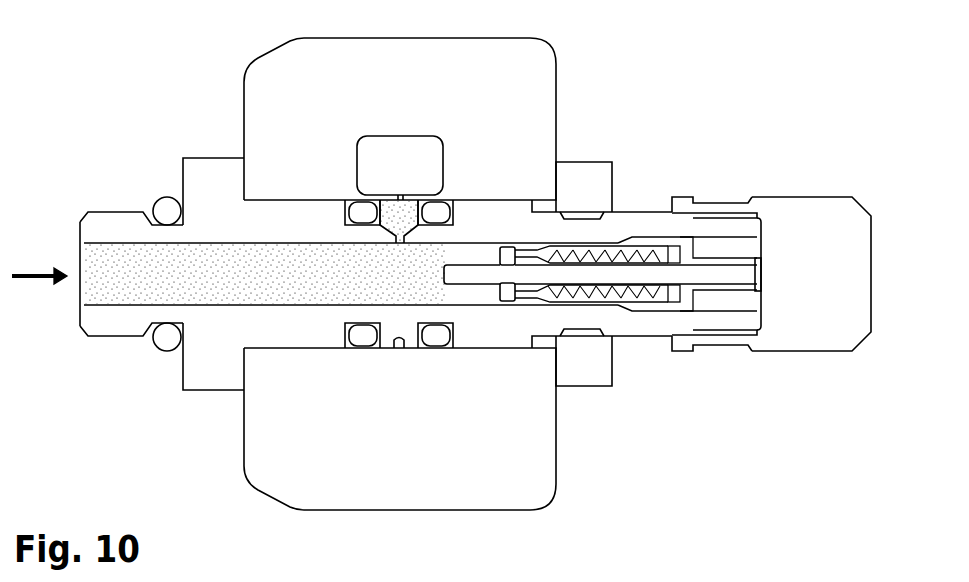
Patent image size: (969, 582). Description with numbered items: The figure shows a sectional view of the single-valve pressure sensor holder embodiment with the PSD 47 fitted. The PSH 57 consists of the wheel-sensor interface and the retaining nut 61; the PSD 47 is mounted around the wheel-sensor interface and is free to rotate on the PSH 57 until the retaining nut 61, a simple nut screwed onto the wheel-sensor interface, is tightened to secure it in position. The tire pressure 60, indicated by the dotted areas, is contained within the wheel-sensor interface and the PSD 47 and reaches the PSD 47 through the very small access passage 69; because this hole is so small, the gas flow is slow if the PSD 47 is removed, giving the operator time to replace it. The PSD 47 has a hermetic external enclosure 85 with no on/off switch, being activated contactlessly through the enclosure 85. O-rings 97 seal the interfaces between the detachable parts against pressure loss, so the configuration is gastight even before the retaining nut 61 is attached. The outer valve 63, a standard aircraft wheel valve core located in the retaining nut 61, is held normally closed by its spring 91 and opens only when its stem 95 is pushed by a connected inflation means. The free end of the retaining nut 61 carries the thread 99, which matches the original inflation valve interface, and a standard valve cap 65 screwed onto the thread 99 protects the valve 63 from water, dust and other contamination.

The PSD 47 is at (283, 44).
The PSD external enclosure 85 is at (522, 500).
The tire pressure 60 is at (263, 127).
The access passage 69 is at (388, 237).
The PSH 57 is at (91, 378).
The O-rings 97 is at (402, 344).
The retaining nut 61 is at (598, 382).
The outer valve 63 is at (625, 303).
The spring 91 is at (662, 293).
The stem 95 is at (742, 272).
The thread 99 is at (708, 212).
The valve cap 65 is at (850, 208).